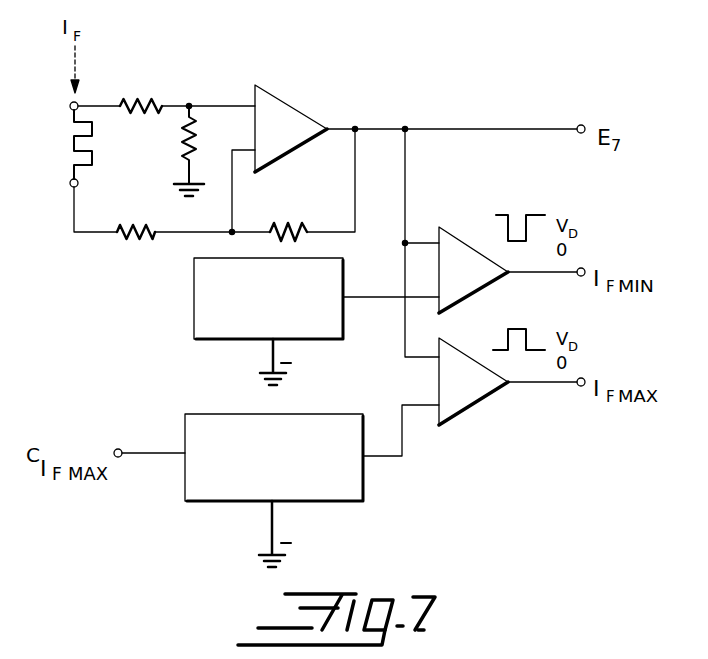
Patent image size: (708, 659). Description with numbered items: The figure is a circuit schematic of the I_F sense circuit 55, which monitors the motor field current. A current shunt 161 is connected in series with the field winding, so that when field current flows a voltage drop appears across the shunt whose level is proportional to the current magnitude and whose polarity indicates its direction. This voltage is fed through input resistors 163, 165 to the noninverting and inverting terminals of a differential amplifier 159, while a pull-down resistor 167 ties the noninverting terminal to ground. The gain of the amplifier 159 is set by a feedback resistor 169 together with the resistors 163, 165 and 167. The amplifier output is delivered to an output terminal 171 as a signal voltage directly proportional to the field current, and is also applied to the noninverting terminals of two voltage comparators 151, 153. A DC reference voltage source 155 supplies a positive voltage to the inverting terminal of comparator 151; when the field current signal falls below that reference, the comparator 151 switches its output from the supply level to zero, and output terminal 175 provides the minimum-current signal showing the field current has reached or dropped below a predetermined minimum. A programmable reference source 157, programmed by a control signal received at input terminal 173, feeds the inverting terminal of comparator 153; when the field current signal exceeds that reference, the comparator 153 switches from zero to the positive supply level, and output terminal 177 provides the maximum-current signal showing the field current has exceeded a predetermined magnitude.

The I_F sense circuit 55 is at (86, 338).
The voltage comparator 151 is at (462, 239).
The voltage comparator 153 is at (483, 400).
The DC reference voltage source 155 is at (192, 313).
The programmable reference source 157 is at (350, 503).
The differential amplifier 159 is at (295, 107).
The current shunt 161 is at (72, 143).
The input resistor 163 is at (133, 98).
The input resistor 165 is at (130, 240).
The pull-down resistor 167 is at (184, 148).
The feedback resistor 169 is at (294, 226).
The output terminal 171 is at (578, 126).
The input terminal 173 is at (120, 449).
The output terminal 175 is at (588, 268).
The output terminal 177 is at (588, 378).